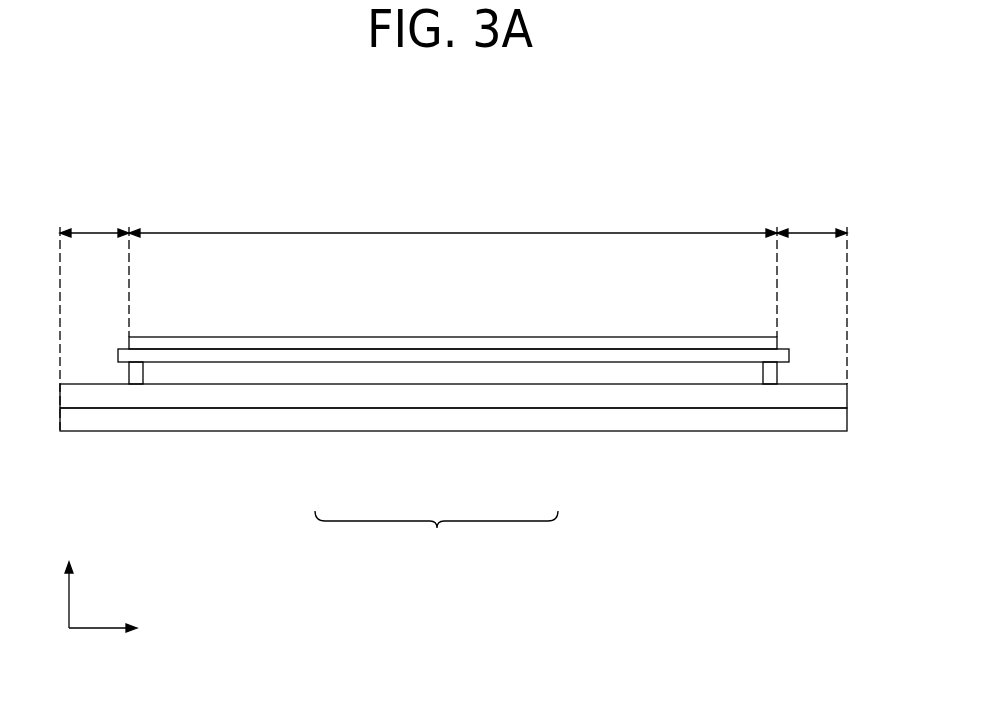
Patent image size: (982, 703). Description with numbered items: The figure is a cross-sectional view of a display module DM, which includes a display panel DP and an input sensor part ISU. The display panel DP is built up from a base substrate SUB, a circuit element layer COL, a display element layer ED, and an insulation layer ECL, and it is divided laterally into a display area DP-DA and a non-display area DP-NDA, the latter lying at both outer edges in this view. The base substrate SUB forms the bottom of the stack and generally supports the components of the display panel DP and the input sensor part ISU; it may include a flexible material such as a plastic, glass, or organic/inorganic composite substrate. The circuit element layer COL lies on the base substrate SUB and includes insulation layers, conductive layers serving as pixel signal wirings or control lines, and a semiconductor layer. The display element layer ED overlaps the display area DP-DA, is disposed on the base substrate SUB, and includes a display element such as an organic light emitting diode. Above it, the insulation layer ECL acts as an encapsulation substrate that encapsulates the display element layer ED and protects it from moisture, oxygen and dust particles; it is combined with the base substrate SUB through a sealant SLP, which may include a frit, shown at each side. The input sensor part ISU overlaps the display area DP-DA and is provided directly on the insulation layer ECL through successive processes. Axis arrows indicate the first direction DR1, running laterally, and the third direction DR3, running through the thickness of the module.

The display module DM is at (733, 154).
The non-display area DP-NDA is at (453, 311).
The display area DP-DA is at (453, 217).
The input sensor part ISU is at (638, 345).
The insulation layer ECL is at (535, 355).
The sealant SLP is at (773, 377).
The display element layer ED is at (468, 374).
The circuit element layer COL is at (400, 398).
The base substrate SUB is at (338, 420).
The display panel DP is at (436, 533).
The third direction DR3 is at (69, 580).
The first direction DR1 is at (123, 628).